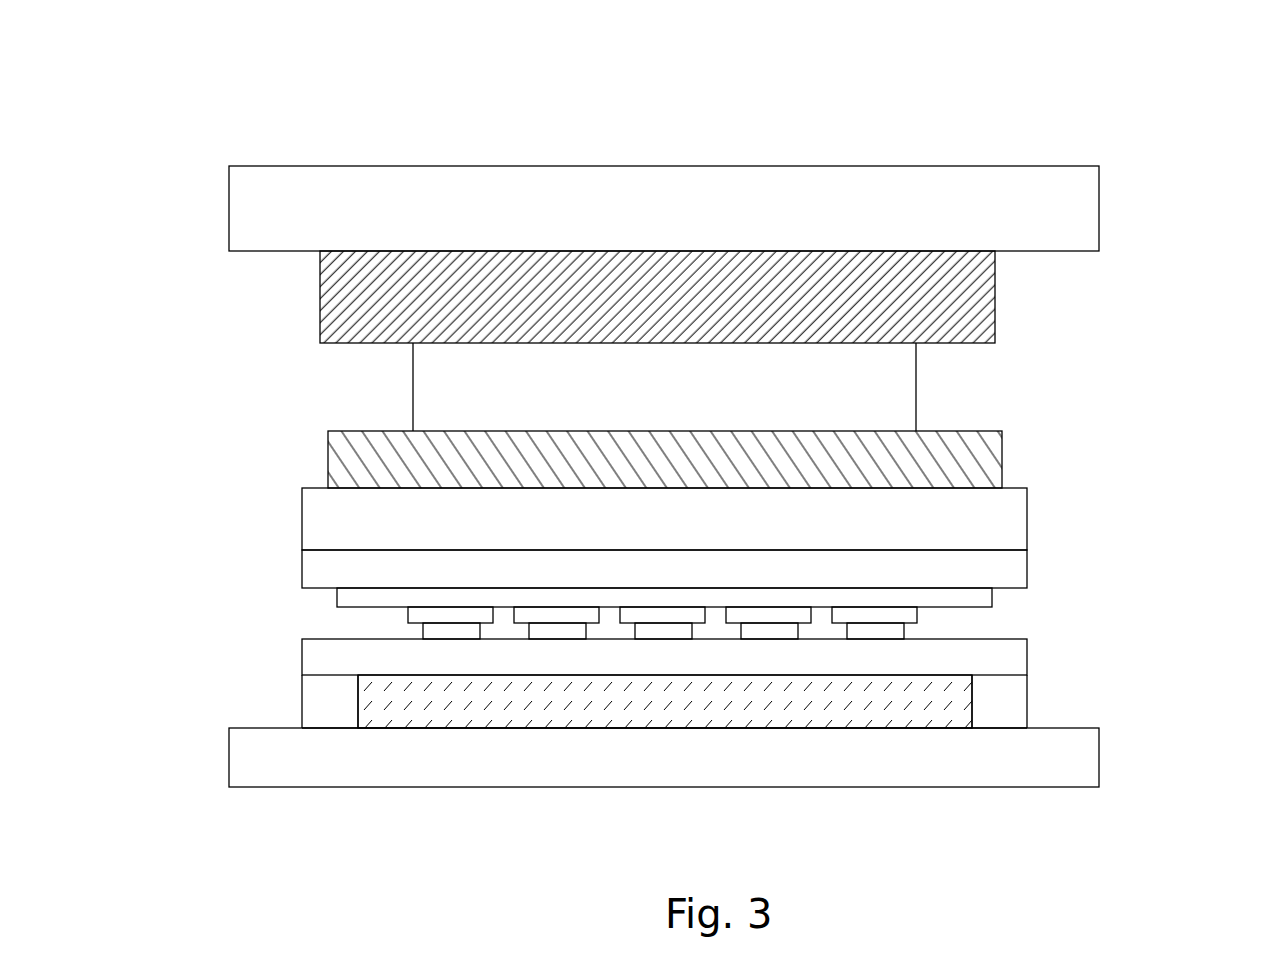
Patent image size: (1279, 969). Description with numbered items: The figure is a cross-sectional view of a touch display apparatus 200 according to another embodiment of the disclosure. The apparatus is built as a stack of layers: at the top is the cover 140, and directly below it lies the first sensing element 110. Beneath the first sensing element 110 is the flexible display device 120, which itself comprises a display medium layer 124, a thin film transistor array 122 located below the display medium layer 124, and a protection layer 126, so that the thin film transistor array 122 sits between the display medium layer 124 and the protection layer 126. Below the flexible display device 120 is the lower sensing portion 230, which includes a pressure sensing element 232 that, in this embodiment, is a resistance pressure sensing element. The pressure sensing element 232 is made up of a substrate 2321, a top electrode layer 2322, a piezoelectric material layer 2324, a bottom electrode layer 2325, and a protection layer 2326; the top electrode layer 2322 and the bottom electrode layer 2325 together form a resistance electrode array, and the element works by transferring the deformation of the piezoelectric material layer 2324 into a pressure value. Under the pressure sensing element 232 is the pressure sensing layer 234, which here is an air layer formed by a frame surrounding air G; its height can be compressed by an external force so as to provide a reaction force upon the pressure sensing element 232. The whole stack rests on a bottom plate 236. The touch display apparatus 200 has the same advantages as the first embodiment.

The touch display apparatus 200 is at (178, 42).
The cover 140 is at (1094, 208).
The first sensing element 110 is at (987, 303).
The flexible display device 120 is at (756, 446).
The thin film transistor array 122 is at (997, 456).
The display medium layer 124 is at (904, 395).
The protection layer 126 is at (722, 519).
The second substrate structure 230 is at (753, 697).
The pressure sensing element 232 is at (757, 621).
The substrate 2321 is at (1025, 567).
The top electrode layer 2322 is at (985, 603).
The piezoelectric material layer 2324 is at (913, 616).
The bottom electrode layer 2325 is at (904, 631).
The protection layer 2326 is at (723, 671).
The pressure sensing layer 234 is at (1005, 710).
The back plate 236 is at (720, 757).
The air G is at (746, 720).